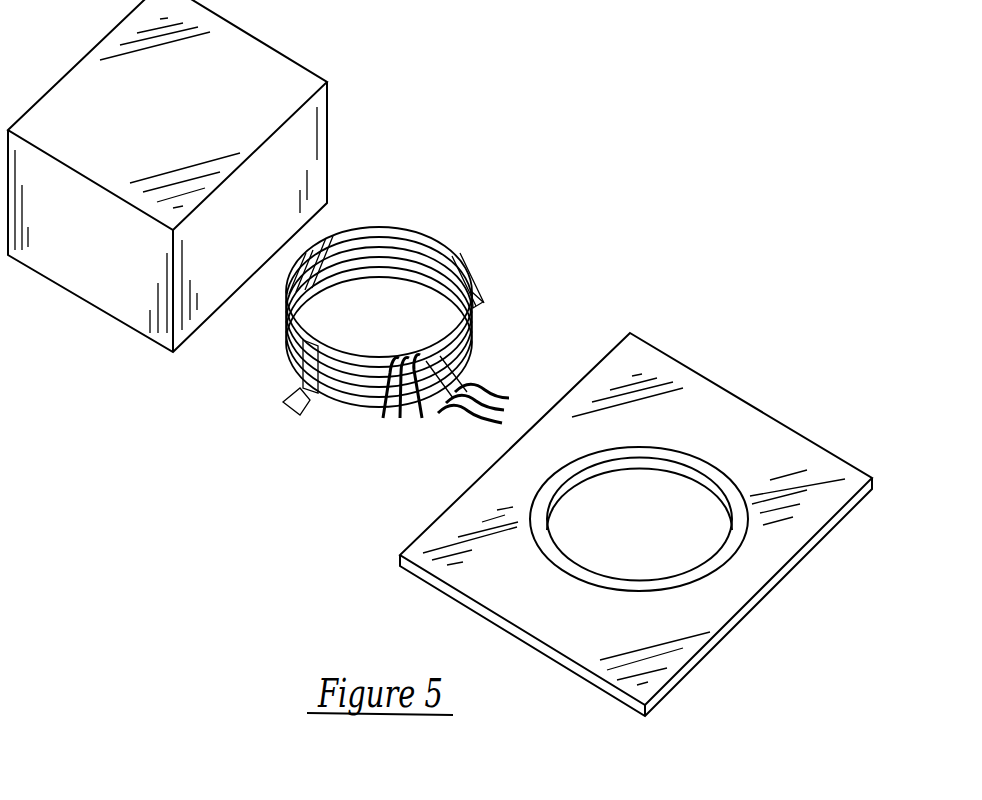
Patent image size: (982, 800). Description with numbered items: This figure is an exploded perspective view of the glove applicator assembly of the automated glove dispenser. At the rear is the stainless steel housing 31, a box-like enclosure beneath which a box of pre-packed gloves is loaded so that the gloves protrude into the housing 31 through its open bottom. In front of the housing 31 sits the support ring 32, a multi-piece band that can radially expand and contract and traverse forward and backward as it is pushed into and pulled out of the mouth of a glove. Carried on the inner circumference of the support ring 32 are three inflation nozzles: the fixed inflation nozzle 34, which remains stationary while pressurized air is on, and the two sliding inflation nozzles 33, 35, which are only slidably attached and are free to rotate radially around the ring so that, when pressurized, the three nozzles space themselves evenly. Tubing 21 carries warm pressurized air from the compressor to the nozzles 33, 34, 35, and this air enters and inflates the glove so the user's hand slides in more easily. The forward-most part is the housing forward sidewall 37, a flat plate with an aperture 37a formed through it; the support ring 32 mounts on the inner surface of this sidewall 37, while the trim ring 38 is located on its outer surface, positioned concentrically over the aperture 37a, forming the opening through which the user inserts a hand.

The housing 31 is at (100, 313).
The support ring 32 is at (433, 242).
The sliding inflation nozzle 33 is at (383, 420).
The fixed inflation nozzle 34 is at (401, 420).
The sliding inflation nozzle 35 is at (423, 418).
The tubing 21 is at (505, 398).
The housing forward sidewall 37 is at (717, 383).
The aperture 37a is at (732, 562).
The trim ring 38 is at (692, 575).